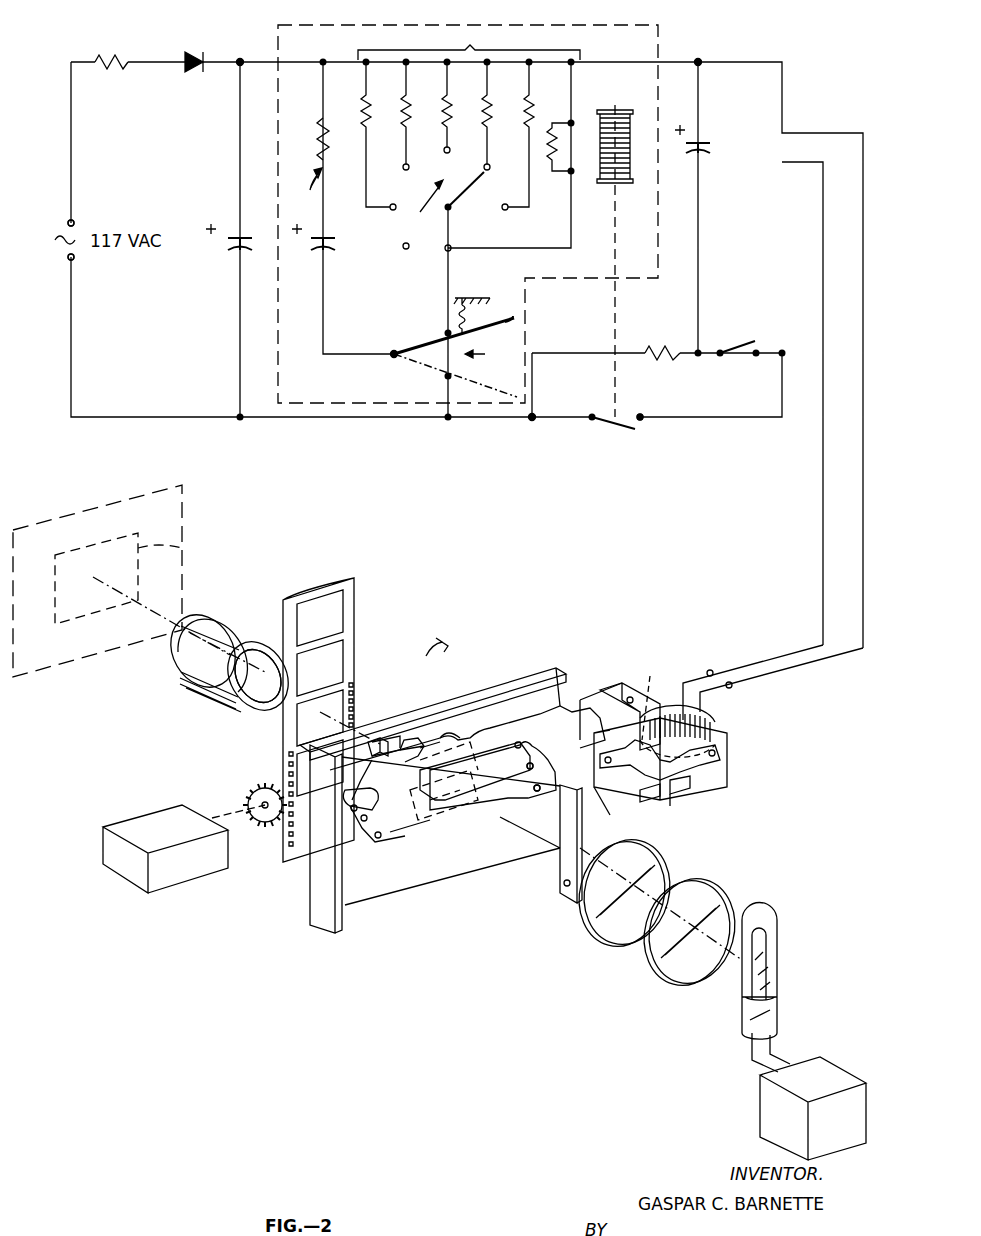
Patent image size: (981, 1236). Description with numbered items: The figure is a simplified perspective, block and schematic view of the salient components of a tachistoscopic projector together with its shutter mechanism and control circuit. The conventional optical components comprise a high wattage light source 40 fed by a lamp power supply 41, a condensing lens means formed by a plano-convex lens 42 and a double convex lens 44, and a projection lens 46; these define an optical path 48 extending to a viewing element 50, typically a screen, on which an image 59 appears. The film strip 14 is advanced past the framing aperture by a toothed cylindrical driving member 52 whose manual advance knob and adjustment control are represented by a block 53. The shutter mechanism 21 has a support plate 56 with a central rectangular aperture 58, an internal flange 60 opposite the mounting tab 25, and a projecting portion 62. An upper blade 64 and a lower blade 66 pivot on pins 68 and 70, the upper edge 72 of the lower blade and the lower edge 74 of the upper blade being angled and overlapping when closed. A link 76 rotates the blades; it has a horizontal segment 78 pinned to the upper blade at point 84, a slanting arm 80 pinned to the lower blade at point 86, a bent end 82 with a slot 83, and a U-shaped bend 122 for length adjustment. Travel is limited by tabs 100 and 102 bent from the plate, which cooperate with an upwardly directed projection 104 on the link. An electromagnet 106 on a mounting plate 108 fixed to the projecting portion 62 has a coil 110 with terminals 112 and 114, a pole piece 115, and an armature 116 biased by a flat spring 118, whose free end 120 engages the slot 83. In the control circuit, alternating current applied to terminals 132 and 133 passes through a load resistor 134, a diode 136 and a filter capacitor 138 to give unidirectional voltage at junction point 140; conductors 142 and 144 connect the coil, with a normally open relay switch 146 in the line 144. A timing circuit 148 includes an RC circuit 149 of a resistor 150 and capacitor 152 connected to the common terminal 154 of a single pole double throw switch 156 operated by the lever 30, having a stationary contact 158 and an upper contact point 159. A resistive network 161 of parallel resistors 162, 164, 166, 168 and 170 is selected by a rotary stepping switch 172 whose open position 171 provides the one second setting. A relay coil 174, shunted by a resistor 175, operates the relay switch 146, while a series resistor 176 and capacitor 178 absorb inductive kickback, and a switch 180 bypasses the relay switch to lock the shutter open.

The film strip 14 is at (356, 597).
The shutter mechanism 21 is at (426, 649).
The mounting tab 25 is at (580, 840).
The lever 30 is at (492, 316).
The light source 40 is at (779, 938).
The lamp power supply 41 is at (806, 1052).
The plano-convex lens 42 is at (709, 870).
The double convex lens 44 is at (648, 848).
The projection lens 46 is at (231, 616).
The optical path 48 is at (246, 708).
The viewing element 50 is at (184, 519).
The toothed cylindrical driving member 52 is at (254, 784).
The block 53 is at (162, 808).
The support plate 56 is at (451, 831).
The rectangular aperture 58 is at (464, 818).
The image 59 is at (180, 552).
The internal flange 60 is at (310, 876).
The projecting portion 62 is at (582, 682).
The upper blade 64 is at (493, 776).
The lower blade 66 is at (408, 823).
The pin 68 is at (530, 764).
The pin 70 is at (376, 838).
The upper edge 72 is at (434, 742).
The lower edge 74 is at (426, 820).
The link 76 is at (478, 712).
The horizontal segment 78 is at (511, 702).
The slanting arm 80 is at (370, 744).
The bent end 82 is at (562, 680).
The slot 83 is at (555, 790).
The pivot point 84 is at (518, 740).
The pivot point 86 is at (368, 764).
The stop tab 100 is at (368, 742).
The stop tab 102 is at (410, 746).
The projection 104 is at (384, 724).
The electromagnet 106 is at (656, 700).
The mounting plate 108 is at (716, 784).
The coil 110 is at (716, 727).
The coil terminal 112 is at (702, 668).
The coil terminal 114 is at (732, 686).
The pole piece 115 is at (648, 650).
The armature 116 is at (610, 794).
The flat spring 118 is at (672, 802).
The free end 120 is at (574, 658).
The U-shaped bend 122 is at (464, 668).
The terminal 132 is at (72, 222).
The terminal 133 is at (72, 260).
The load resistor 134 is at (124, 51).
The diode 136 is at (198, 51).
The filter capacitor 138 is at (234, 250).
The junction point 140 is at (254, 37).
The conductor 142 is at (671, 62).
The conductor 144 is at (524, 420).
The relay switch 146 is at (602, 428).
The timing circuit 148 is at (436, 32).
The RC circuit 149 is at (301, 182).
The resistor 150 is at (318, 136).
The capacitor 152 is at (316, 250).
The common terminal 154 is at (395, 351).
The single pole double throw switch 156 is at (458, 341).
The stationary contact 158 is at (446, 376).
The upper contact point 159 is at (446, 332).
The resistive network 161 is at (479, 44).
The resistor 162 is at (362, 98).
The resistor 164 is at (402, 98).
The resistor 166 is at (443, 98).
The resistor 168 is at (483, 98).
The resistor 170 is at (523, 98).
The open position 171 is at (402, 248).
The rotary stepping switch 172 is at (437, 204).
The relay coil 174 is at (640, 84).
The shunt resistor 175 is at (554, 144).
The resistor 176 is at (661, 341).
The capacitor 178 is at (710, 156).
The switch 180 is at (744, 341).